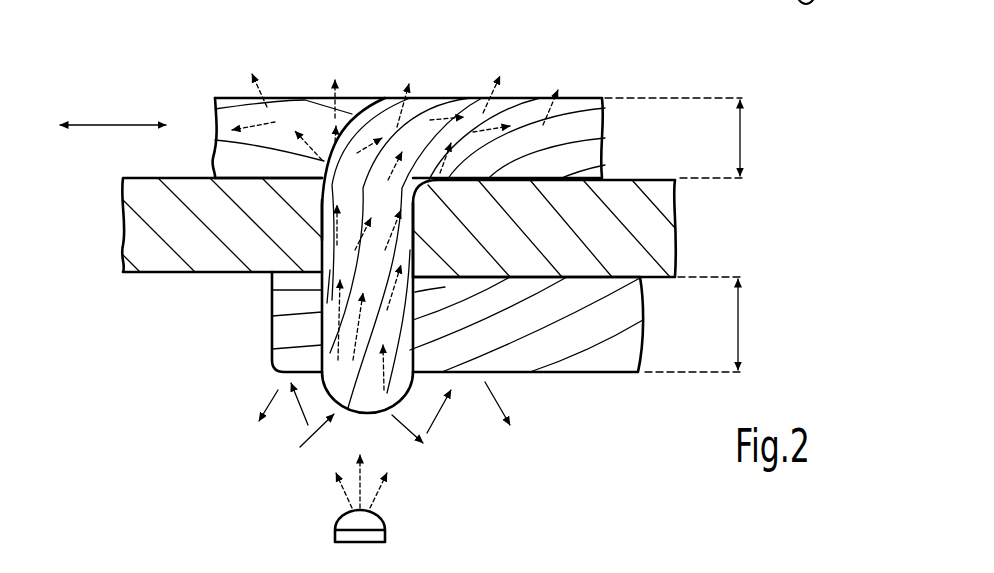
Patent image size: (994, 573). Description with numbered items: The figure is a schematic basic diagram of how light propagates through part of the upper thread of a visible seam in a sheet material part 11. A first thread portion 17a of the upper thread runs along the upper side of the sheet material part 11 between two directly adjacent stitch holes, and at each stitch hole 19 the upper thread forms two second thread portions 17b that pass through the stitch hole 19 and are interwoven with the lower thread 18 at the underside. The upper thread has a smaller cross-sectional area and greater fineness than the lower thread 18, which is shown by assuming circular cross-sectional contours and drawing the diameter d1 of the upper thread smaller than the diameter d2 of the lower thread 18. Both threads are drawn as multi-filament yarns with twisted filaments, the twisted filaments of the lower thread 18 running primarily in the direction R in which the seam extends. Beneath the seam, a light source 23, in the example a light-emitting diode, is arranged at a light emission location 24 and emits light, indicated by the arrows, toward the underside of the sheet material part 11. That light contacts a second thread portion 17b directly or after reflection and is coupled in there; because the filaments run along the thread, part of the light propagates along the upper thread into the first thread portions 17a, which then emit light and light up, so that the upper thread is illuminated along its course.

The sheet material part 11 is at (660, 230).
The first thread portion 17a is at (284, 106).
The second thread portion 17b is at (332, 304).
The lower thread 18 is at (622, 353).
The stitch hole 19 is at (320, 218).
The light source 23 is at (385, 525).
The light emission location 24 is at (326, 509).
The direction R is at (107, 125).
The diameter d1 is at (741, 138).
The diameter d2 is at (740, 318).